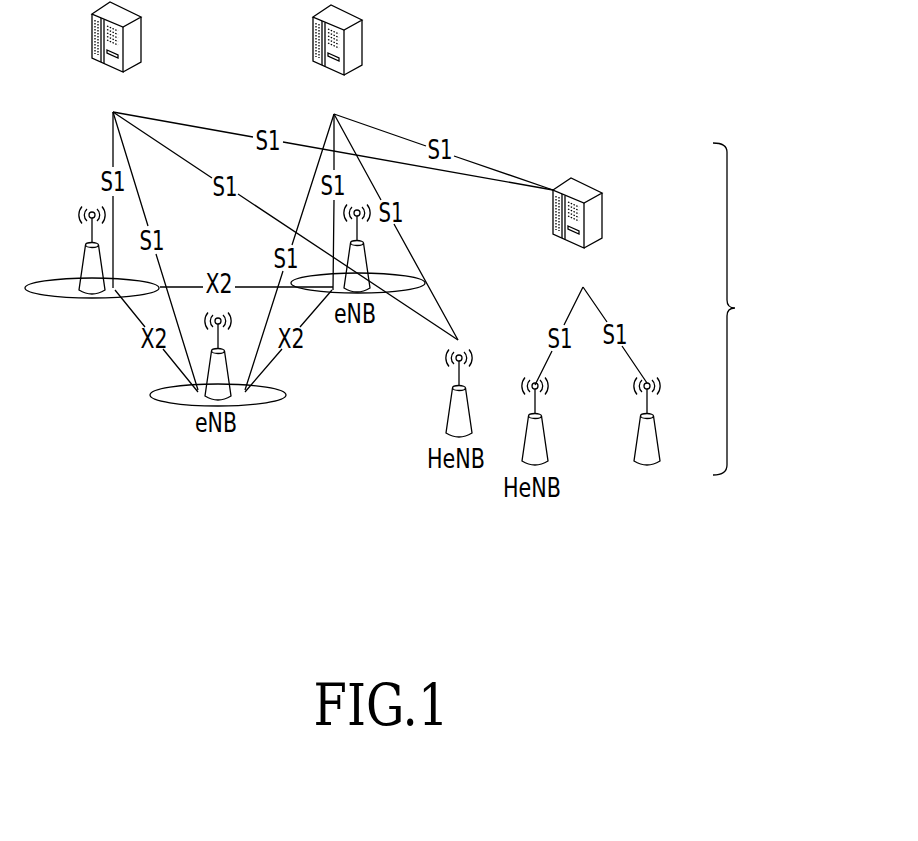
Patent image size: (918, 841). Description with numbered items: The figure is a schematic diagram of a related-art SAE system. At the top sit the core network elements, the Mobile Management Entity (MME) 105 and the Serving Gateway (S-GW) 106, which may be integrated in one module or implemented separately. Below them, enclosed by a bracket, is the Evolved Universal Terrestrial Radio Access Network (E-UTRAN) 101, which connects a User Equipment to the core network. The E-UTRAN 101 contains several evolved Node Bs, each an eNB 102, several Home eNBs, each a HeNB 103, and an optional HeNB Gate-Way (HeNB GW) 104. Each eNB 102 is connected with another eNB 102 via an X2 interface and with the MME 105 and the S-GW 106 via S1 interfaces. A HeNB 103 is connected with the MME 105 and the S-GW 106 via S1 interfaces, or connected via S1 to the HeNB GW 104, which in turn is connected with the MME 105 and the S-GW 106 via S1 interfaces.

The Evolved Universal Terrestrial Radio Access Network (E-UTRAN) 101 is at (800, 292).
The evolved Node B (eNB) 102 is at (80, 252).
The Home eNB (HeNB) 103 is at (659, 433).
The HeNB Gate-Way (HeNB GW) 104 is at (604, 213).
The Mobile Management Entity (MME) 105 is at (363, 37).
The Serving Gateway (S-GW) 106 is at (142, 34).